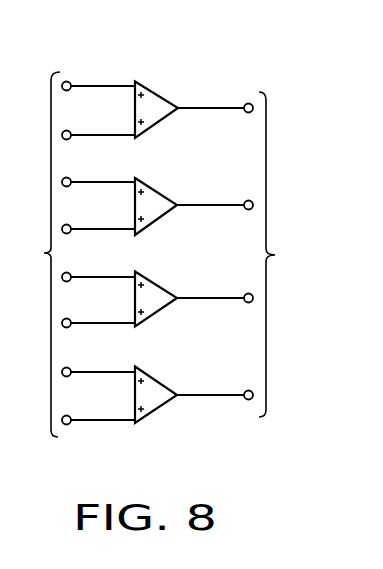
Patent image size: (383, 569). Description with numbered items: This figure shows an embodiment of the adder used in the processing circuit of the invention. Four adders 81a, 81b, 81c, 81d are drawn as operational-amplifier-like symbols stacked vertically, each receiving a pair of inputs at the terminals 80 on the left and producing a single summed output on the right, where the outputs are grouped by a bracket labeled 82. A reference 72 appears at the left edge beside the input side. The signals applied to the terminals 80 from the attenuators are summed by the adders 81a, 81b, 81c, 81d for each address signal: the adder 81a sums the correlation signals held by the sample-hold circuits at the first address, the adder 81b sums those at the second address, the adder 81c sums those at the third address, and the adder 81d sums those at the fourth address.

The signal input bus 72 is at (11, 183).
The terminals 80 is at (32, 254).
The adder 81a is at (160, 93).
The adder 81b is at (158, 190).
The adder 81c is at (158, 284).
The adder 81d is at (156, 380).
The output terminals group 82 is at (286, 254).